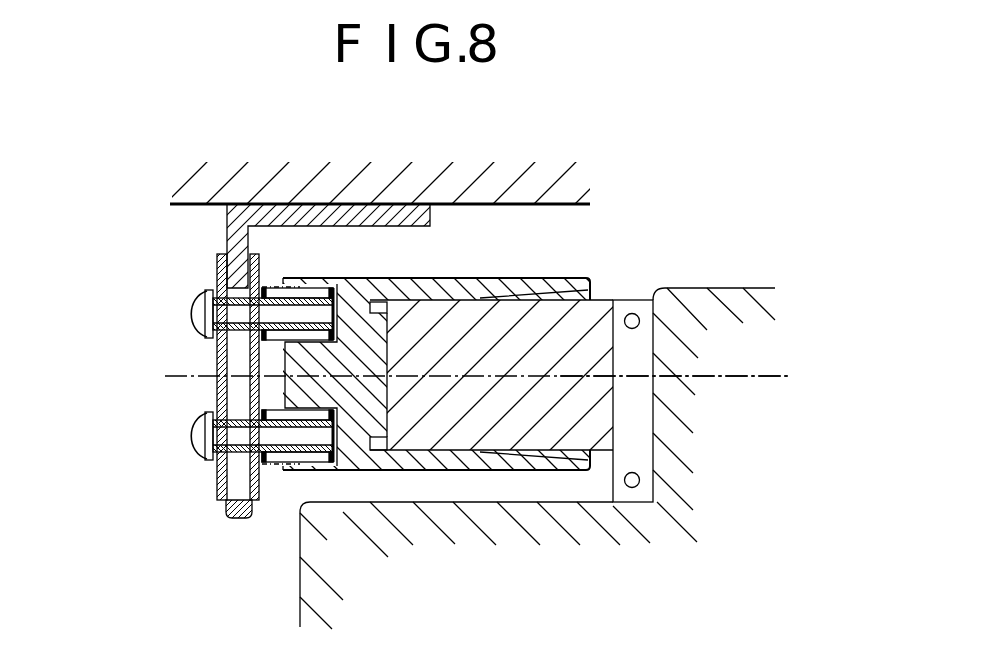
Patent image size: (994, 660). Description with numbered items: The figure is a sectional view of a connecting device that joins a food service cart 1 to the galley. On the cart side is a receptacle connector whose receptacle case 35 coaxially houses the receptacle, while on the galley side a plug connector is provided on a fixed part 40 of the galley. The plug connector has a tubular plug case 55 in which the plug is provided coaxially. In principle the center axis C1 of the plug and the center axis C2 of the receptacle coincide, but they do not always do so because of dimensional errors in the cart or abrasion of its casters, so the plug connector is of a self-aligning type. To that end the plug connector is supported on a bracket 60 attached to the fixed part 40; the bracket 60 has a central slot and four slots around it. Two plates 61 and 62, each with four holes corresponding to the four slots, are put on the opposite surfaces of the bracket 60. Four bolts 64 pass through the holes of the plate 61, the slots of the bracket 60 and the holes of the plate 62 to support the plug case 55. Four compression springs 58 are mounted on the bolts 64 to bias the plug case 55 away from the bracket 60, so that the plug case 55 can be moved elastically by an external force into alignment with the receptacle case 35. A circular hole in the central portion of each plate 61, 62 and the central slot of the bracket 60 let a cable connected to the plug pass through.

The food service cart 1 is at (570, 585).
The receptacle case 35 is at (594, 318).
The fixed part 40 is at (421, 154).
The plug case 55 is at (545, 281).
The compression springs 58 is at (273, 284).
The bracket 60 is at (227, 239).
The plate 61 is at (259, 487).
The plate 62 is at (219, 489).
The bolts 64 is at (217, 311).
The center axis of the plug C1 is at (272, 376).
The center axis of the receptacle C2 is at (596, 377).